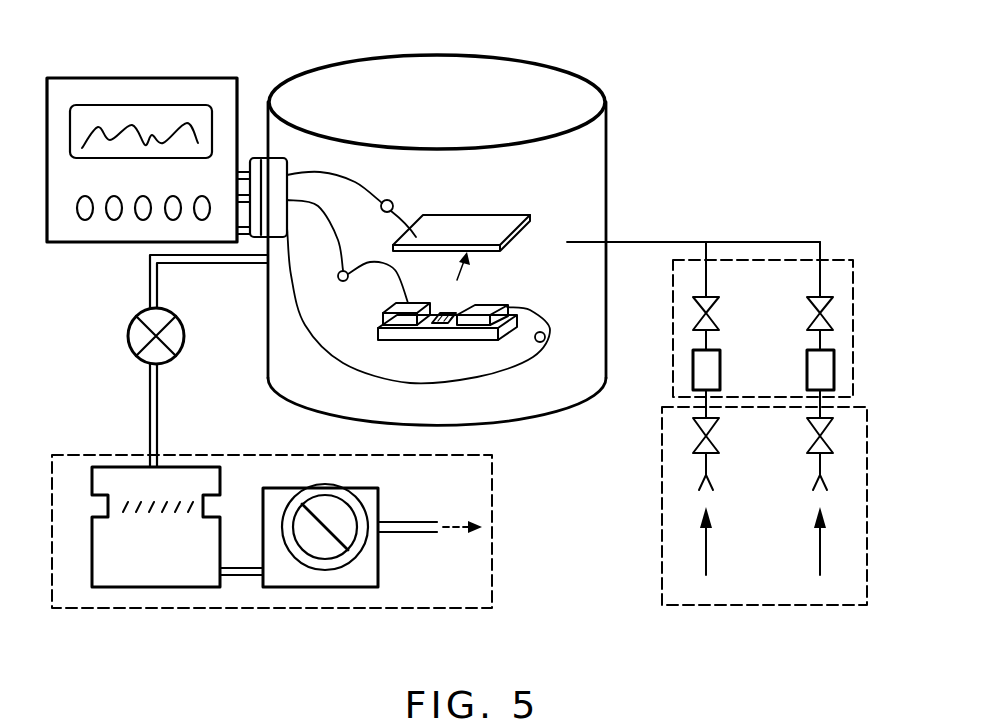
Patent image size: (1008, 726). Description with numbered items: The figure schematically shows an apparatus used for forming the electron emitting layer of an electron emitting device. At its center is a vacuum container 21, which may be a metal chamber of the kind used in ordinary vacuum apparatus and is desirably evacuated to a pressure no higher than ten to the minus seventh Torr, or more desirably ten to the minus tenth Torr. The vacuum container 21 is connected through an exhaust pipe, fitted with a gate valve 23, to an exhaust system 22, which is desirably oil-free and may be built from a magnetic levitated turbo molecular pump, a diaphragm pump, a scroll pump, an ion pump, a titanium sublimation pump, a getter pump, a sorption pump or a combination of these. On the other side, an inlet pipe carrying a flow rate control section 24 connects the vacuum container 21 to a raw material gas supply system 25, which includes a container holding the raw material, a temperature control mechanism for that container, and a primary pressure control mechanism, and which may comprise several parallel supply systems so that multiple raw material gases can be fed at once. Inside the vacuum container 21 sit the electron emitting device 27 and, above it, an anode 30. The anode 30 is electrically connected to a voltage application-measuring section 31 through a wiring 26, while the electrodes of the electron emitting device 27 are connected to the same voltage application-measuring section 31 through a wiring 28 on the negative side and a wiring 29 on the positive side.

The vacuum container 21 is at (607, 142).
The exhaust system 22 is at (345, 610).
The gate valve 23 is at (127, 323).
The flow rate control section 24 is at (855, 305).
The raw material gas supply system 25 is at (798, 606).
The wiring 26 is at (340, 183).
The electron emitting device 27 is at (435, 341).
The wiring on the negative side 28 is at (345, 262).
The wiring on the positive side 29 is at (303, 318).
The anode 30 is at (510, 215).
The voltage application-measuring section 31 is at (172, 78).